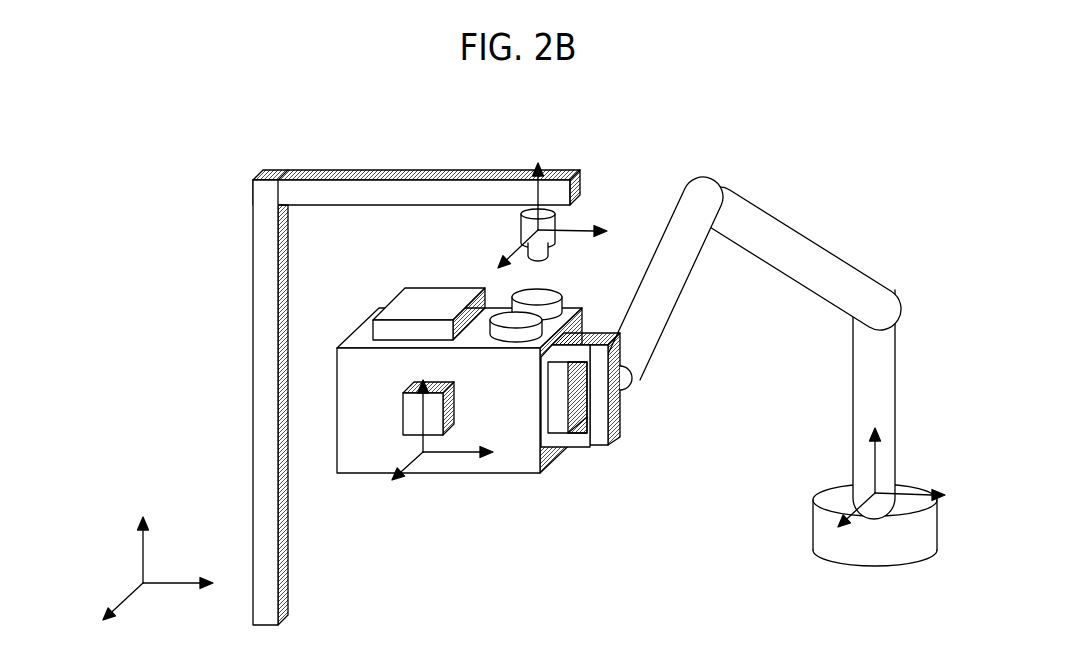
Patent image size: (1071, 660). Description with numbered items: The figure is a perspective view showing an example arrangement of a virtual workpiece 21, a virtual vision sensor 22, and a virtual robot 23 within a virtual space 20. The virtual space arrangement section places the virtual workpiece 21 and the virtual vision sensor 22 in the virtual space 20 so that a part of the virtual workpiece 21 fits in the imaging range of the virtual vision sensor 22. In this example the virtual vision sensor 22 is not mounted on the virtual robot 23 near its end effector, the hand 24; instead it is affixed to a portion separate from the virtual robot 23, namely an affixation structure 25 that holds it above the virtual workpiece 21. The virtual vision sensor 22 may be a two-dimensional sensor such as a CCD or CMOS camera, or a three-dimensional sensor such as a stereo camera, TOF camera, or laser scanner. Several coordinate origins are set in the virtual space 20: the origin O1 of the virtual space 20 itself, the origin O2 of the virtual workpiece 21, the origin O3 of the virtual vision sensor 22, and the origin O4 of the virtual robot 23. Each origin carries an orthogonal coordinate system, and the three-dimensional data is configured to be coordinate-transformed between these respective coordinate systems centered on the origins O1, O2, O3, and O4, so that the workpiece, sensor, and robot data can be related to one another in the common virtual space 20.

The virtual space 20 is at (170, 121).
The virtual workpiece 21 is at (350, 340).
The virtual vision sensor 22 is at (522, 232).
The virtual robot 23 is at (803, 258).
The hand 24 is at (617, 417).
The affixation structure 25 is at (412, 172).
The origin of the virtual space O1 is at (163, 580).
The origin of the virtual workpiece O2 is at (451, 455).
The origin of the virtual vision sensor O3 is at (577, 227).
The origin of the virtual robot O4 is at (873, 467).